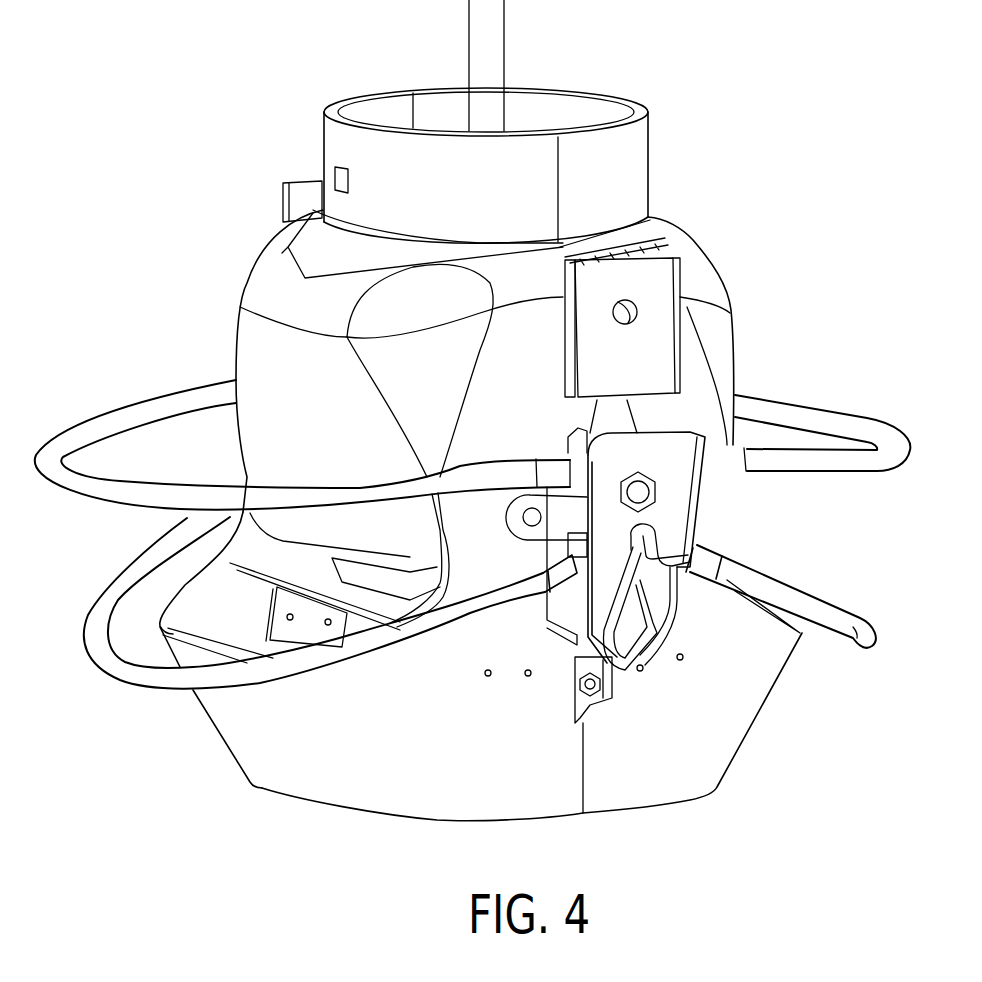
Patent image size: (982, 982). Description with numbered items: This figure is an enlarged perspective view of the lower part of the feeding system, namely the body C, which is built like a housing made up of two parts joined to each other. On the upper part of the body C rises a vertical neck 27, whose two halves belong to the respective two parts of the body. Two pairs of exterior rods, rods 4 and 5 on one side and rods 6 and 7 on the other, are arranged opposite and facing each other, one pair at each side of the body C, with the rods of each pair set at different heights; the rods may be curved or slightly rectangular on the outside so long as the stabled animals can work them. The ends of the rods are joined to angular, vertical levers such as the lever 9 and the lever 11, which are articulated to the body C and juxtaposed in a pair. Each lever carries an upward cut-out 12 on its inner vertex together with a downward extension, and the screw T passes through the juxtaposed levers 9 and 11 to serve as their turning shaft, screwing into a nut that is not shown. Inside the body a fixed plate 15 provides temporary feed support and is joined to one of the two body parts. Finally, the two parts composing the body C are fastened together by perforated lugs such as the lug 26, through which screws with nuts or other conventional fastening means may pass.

The vertical neck 27 is at (656, 130).
The body C is at (237, 322).
The exterior rod 6 is at (68, 435).
The exterior rod 4 is at (867, 430).
The exterior rod 7 is at (93, 618).
The exterior rod 5 is at (857, 623).
The fixed plate 15 is at (367, 597).
The lever 9 is at (673, 453).
The screw T is at (645, 492).
The upward cut-out 12 is at (647, 532).
The lever 11 is at (662, 600).
The lug 26 is at (612, 690).